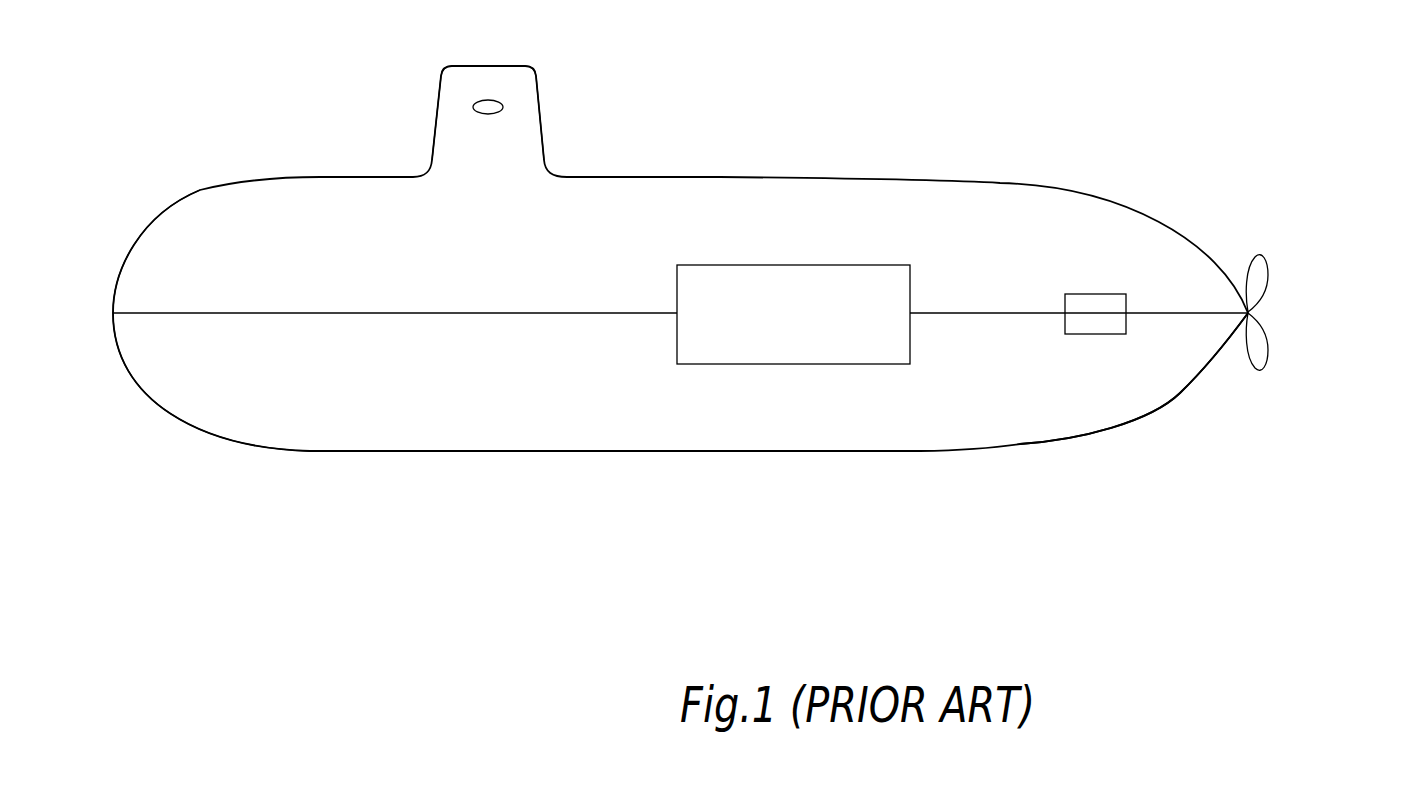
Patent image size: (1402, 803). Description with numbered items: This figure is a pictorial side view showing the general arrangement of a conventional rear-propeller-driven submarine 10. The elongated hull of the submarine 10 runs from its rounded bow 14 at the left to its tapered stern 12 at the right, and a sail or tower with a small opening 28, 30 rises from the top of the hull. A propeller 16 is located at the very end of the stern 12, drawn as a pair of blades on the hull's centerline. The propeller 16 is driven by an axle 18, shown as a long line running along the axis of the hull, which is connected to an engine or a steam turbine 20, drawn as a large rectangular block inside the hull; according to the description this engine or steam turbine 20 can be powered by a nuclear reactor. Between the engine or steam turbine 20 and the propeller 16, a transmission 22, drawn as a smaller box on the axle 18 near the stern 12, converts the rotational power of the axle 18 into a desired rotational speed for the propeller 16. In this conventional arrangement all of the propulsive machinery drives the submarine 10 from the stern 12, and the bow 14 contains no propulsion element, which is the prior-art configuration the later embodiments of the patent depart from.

The submarine 10 is at (722, 176).
The stern 12 is at (1233, 347).
The bow 14 is at (152, 423).
The propeller 16 is at (1260, 278).
The axle 18 is at (1003, 313).
The engine or steam turbine 20 is at (890, 264).
The transmission 22 is at (1115, 300).
The hatch opening 28 is at (486, 105).
The sail (conning tower) 30 is at (543, 117).